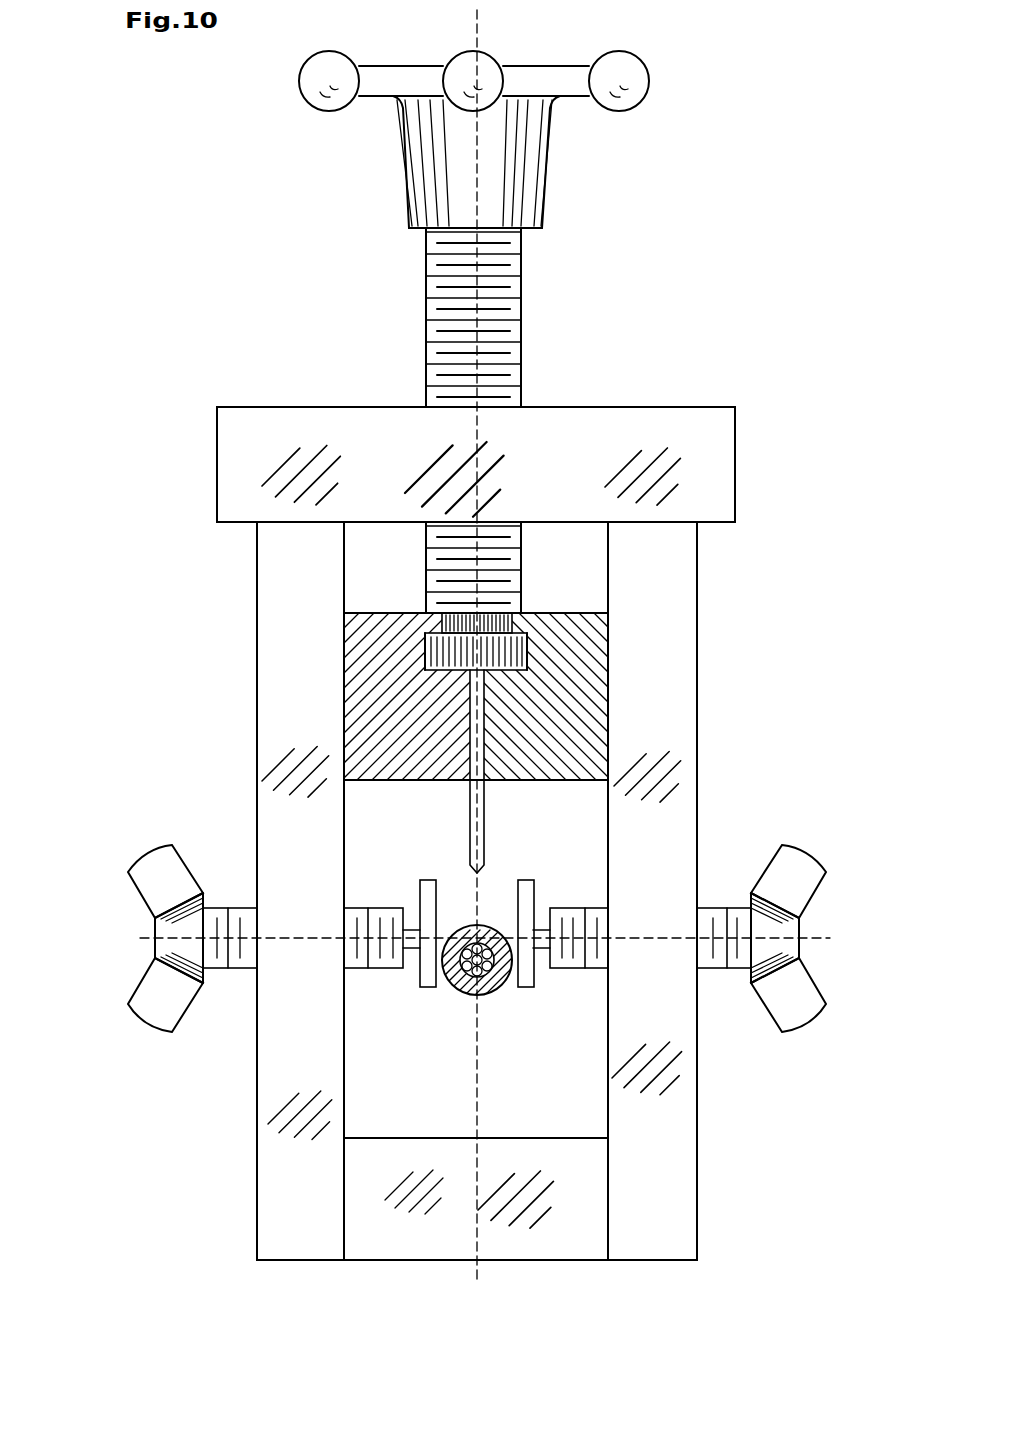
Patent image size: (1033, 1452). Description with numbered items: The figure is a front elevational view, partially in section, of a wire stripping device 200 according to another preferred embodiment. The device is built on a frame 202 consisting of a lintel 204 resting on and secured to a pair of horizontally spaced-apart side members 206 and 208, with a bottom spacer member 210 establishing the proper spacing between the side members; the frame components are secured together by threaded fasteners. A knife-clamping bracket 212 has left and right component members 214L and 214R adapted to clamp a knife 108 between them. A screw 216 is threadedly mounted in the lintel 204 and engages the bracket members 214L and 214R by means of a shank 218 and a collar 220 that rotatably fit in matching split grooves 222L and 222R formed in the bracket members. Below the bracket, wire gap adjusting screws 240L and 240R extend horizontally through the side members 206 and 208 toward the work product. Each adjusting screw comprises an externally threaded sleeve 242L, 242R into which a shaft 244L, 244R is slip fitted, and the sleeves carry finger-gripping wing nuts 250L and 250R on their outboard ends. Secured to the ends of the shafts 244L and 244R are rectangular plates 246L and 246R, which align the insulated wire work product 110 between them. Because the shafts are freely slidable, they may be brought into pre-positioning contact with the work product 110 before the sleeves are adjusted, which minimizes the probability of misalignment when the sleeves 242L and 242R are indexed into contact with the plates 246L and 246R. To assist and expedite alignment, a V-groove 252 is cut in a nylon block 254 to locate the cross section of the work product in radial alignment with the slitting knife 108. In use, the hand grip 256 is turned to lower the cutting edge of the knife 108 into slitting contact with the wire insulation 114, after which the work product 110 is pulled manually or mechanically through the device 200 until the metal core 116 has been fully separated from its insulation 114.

The device 200 is at (185, 435).
The hand grip 256 is at (648, 78).
The screw 216 is at (521, 293).
The lintel 204 is at (736, 457).
The frame 202 is at (257, 567).
The side member 206 is at (280, 740).
The side member 208 is at (668, 700).
The knife-clamping bracket 212 is at (608, 668).
The left component member 214L is at (360, 672).
The right component member 214R is at (609, 633).
The split groove 222L is at (424, 648).
The split groove 222R is at (528, 640).
The shank 218 is at (491, 617).
The collar 220 is at (424, 647).
The knife 108 is at (470, 830).
The adjusting screw 240L is at (141, 925).
The adjusting screw 240R is at (805, 952).
The wing nut 250L is at (165, 860).
The wing nut 250R is at (798, 868).
The externally threaded sleeve 242L is at (248, 957).
The externally threaded sleeve 242R is at (712, 962).
The rectangular plate 246L is at (420, 975).
The rectangular plate 246R is at (533, 975).
The shaft 244L is at (412, 928).
The shaft 244R is at (540, 930).
The insulated wire work product 110 is at (492, 928).
The wire insulation 114 is at (458, 988).
The metal core 116 is at (489, 966).
The V-groove 252 is at (483, 997).
The nylon block 254 is at (447, 1122).
The bottom spacer member 210 is at (557, 1247).